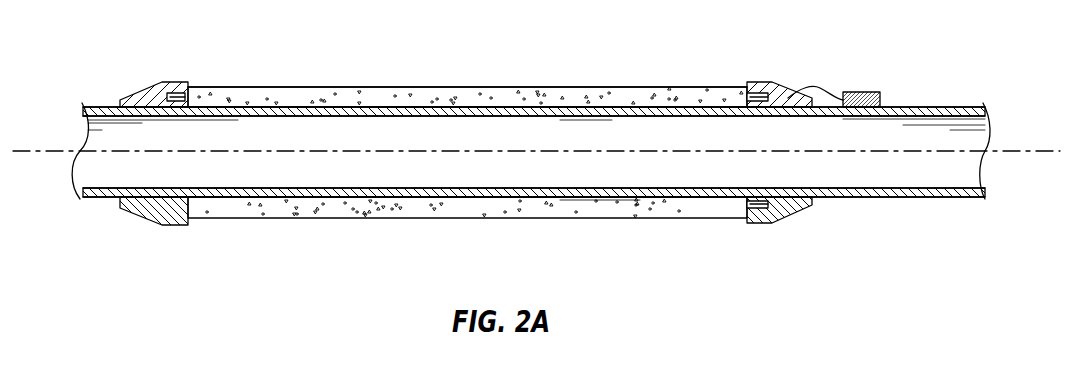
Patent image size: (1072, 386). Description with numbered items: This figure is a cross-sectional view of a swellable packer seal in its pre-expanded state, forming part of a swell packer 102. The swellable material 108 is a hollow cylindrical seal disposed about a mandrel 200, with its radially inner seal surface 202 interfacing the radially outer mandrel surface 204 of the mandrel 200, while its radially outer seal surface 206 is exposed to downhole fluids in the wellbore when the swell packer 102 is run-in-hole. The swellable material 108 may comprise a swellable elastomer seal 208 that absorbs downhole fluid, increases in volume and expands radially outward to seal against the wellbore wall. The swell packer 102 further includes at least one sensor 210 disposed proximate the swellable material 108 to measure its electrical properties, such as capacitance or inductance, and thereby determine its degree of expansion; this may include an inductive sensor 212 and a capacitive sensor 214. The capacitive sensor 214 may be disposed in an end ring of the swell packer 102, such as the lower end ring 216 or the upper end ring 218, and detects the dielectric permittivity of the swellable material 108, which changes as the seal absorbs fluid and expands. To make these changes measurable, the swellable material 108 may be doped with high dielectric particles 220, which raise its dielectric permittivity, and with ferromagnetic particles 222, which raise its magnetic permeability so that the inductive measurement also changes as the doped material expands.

The swell packer 102 is at (762, 385).
The swellable material 108 is at (610, 102).
The mandrel 200 is at (330, 105).
The radially inner seal surface 202 is at (505, 104).
The radially outer mandrel surface 204 is at (429, 112).
The radially outer seal surface 206 is at (553, 87).
The swellable elastomer seal 208 is at (647, 98).
The sensor 210 is at (770, 95).
The inductive sensor 212 is at (177, 97).
The capacitive sensor 214 is at (755, 94).
The lower end ring 216 is at (797, 208).
The upper end ring 218 is at (142, 98).
The high dielectric particles 220 is at (328, 210).
The ferromagnetic particles 222 is at (562, 212).